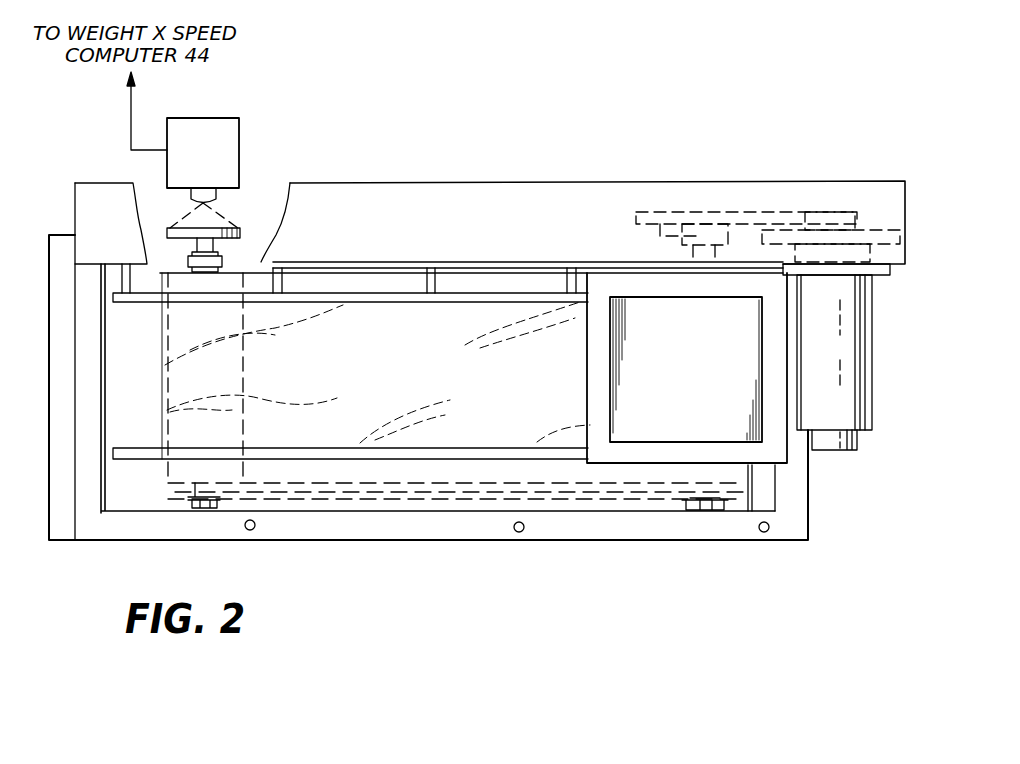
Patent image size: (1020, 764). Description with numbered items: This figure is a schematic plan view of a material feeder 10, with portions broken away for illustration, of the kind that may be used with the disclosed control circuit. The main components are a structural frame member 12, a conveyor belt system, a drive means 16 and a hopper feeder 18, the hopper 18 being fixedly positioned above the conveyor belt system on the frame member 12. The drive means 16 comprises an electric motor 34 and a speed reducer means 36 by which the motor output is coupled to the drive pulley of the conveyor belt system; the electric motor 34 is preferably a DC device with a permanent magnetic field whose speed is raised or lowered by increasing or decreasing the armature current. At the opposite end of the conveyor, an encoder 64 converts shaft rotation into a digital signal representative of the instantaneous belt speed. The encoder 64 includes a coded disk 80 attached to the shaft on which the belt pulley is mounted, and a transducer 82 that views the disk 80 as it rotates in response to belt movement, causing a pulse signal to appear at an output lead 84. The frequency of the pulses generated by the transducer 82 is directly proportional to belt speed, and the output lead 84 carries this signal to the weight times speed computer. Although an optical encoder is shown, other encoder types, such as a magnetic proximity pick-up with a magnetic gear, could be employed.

The material feeder 10 is at (547, 180).
The structural frame member 12 is at (613, 540).
The drive means 16 is at (874, 404).
The hopper feeder 18 is at (787, 455).
The electric motor 34 is at (872, 313).
The speed reducer means 36 is at (725, 213).
The encoder 64 is at (265, 180).
The coded disk 80 is at (240, 226).
The transducer 82 is at (233, 135).
The output lead 84 is at (132, 108).